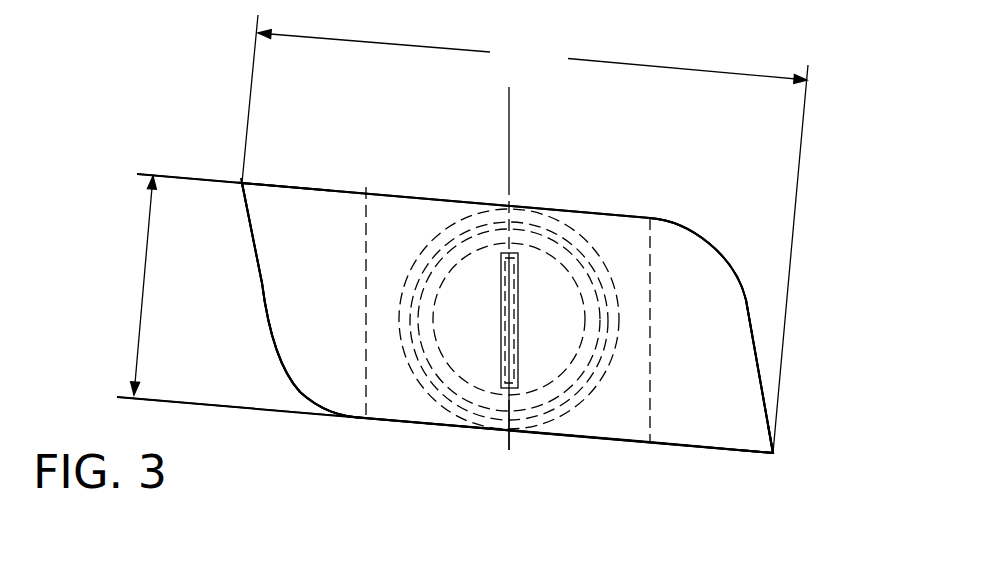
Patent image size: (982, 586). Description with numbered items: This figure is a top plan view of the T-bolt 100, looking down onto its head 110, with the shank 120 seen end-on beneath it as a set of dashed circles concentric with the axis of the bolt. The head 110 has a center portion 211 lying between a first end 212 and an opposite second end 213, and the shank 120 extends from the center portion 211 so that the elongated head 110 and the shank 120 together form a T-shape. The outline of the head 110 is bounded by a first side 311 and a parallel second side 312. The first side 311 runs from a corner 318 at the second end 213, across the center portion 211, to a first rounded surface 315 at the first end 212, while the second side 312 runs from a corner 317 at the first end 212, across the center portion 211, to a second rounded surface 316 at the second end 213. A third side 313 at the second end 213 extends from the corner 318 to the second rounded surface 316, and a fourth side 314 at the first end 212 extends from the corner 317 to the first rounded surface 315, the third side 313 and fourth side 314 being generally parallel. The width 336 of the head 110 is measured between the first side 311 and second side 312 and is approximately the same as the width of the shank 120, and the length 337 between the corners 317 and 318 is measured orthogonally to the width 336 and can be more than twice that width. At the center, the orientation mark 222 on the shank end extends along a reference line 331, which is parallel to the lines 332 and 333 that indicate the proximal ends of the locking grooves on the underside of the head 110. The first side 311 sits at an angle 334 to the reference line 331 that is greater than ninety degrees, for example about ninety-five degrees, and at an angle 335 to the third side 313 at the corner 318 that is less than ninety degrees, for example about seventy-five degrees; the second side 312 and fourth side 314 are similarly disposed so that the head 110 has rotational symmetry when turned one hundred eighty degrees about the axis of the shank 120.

The T-bolt 100 is at (733, 33).
The head 110 is at (756, 290).
The shank 120 is at (455, 215).
The center portion 211 is at (527, 457).
The first end 212 is at (738, 466).
The second end 213 is at (323, 437).
The orientation mark 222 is at (502, 322).
The first side 311 is at (334, 185).
The second side 312 is at (583, 438).
The third side 313 is at (261, 289).
The fourth side 314 is at (758, 358).
The first rounded surface 315 is at (714, 246).
The second rounded surface 316 is at (303, 393).
The corner 317 is at (773, 453).
The corner 318 is at (242, 183).
The reference line 331 is at (502, 449).
The line 332 is at (648, 418).
The line 333 is at (369, 220).
The angle 334 is at (613, 212).
The angle 335 is at (303, 196).
The width 336 is at (241, 296).
The length 337 is at (525, 234).